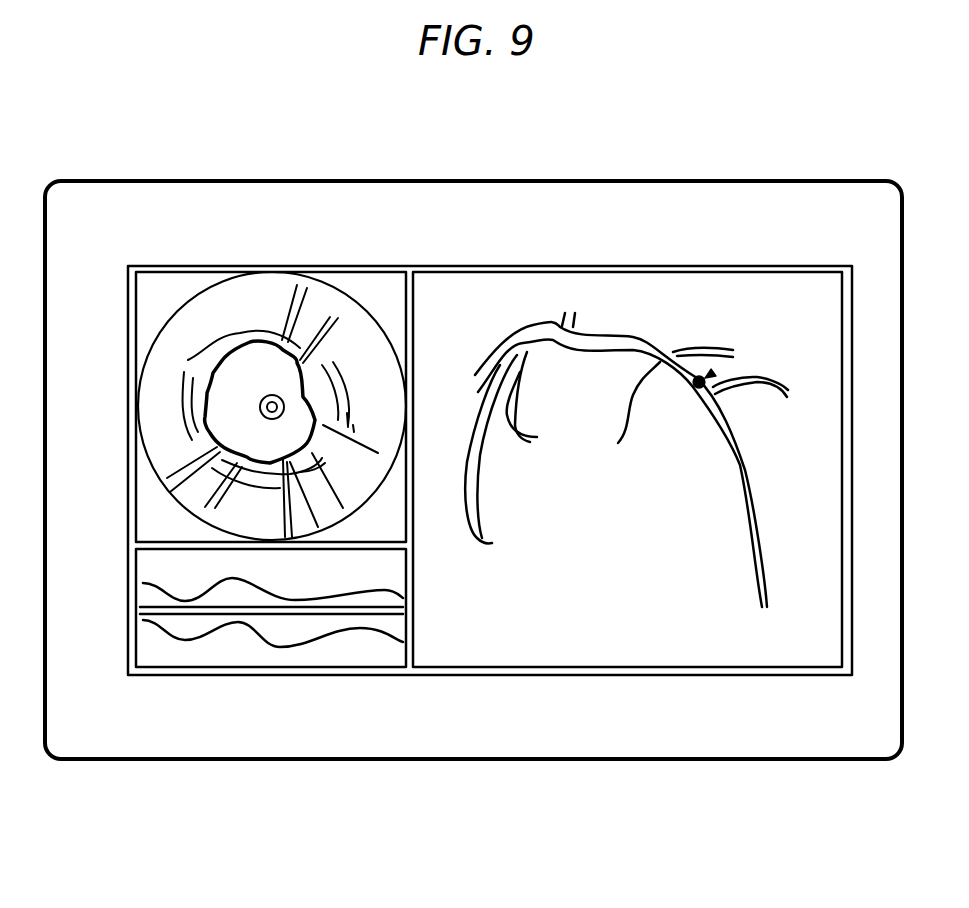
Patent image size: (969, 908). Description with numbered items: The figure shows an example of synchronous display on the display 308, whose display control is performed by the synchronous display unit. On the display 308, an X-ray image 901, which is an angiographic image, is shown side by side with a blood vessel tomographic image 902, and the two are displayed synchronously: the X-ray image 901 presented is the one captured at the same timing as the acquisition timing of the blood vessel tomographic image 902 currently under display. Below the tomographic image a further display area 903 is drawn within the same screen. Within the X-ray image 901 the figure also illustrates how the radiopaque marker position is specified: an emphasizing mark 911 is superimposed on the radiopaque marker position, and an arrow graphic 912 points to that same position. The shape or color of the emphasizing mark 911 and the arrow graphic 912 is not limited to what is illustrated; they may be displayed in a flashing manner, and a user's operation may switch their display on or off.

The display 308 is at (385, 181).
The X-ray image 901 is at (614, 282).
The blood vessel tomographic image 902 is at (198, 270).
The waveform display area 903 is at (250, 650).
The emphasizing mark 911 is at (697, 390).
The arrow graphic 912 is at (712, 372).